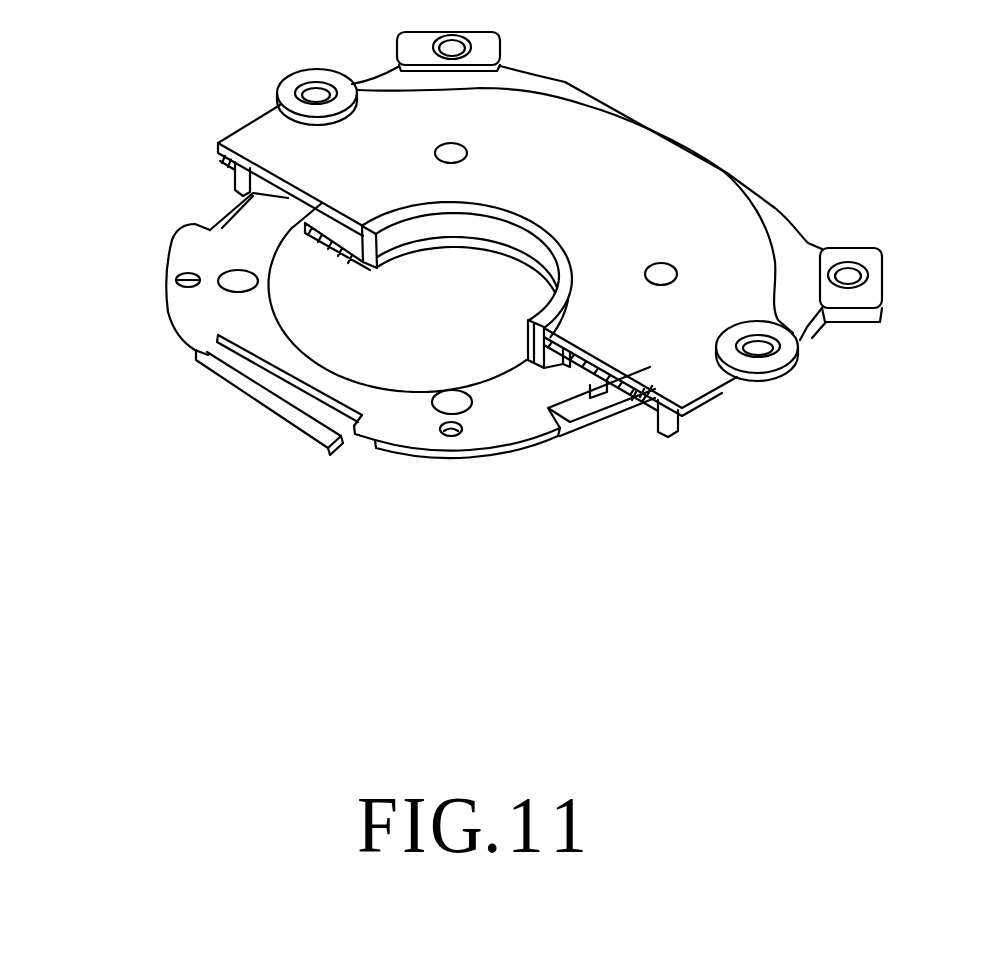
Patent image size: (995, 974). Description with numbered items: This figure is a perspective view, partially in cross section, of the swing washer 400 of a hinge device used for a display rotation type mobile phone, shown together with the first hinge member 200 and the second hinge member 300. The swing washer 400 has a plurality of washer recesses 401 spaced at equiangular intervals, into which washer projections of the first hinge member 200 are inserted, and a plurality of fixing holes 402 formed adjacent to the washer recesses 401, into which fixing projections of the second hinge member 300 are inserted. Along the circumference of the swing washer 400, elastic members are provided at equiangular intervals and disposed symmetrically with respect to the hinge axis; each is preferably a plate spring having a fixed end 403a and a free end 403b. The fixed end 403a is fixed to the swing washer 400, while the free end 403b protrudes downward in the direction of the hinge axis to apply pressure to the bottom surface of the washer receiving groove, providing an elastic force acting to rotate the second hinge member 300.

The first hinge member 200 is at (248, 130).
The second hinge member 300 is at (776, 211).
The swing washer 400 is at (338, 383).
The washer recess 401 is at (443, 403).
The fixing hole 402 is at (453, 432).
The fixed end 403a is at (200, 352).
The free end 403b is at (312, 430).